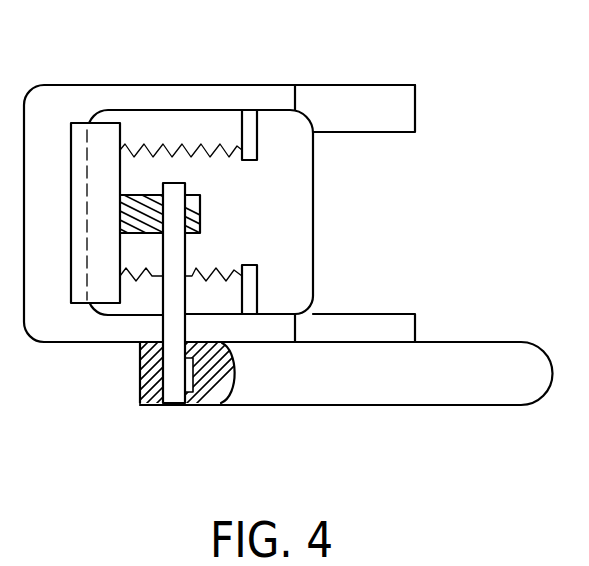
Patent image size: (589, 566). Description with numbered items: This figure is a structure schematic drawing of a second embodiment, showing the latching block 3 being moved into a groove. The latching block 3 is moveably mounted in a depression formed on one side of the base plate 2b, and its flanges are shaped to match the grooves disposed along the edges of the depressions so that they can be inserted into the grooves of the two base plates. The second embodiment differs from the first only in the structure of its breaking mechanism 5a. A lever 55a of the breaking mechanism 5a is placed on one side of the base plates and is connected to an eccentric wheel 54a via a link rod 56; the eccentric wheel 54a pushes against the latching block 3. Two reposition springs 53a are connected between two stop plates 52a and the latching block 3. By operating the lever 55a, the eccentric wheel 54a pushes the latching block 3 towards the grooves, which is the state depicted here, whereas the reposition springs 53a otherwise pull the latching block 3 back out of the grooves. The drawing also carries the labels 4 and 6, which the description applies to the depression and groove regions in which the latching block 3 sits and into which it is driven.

The base plate 2b is at (57, 325).
The latching block 3 is at (103, 138).
The slider block 4 is at (293, 194).
The breaking mechanism 5a is at (287, 362).
The inner member 6 is at (78, 140).
The stop plates 52a is at (252, 135).
The reposition springs 53a is at (205, 145).
The eccentric wheel 54a is at (140, 205).
The lever 55a is at (410, 380).
The link rod 56 is at (166, 295).